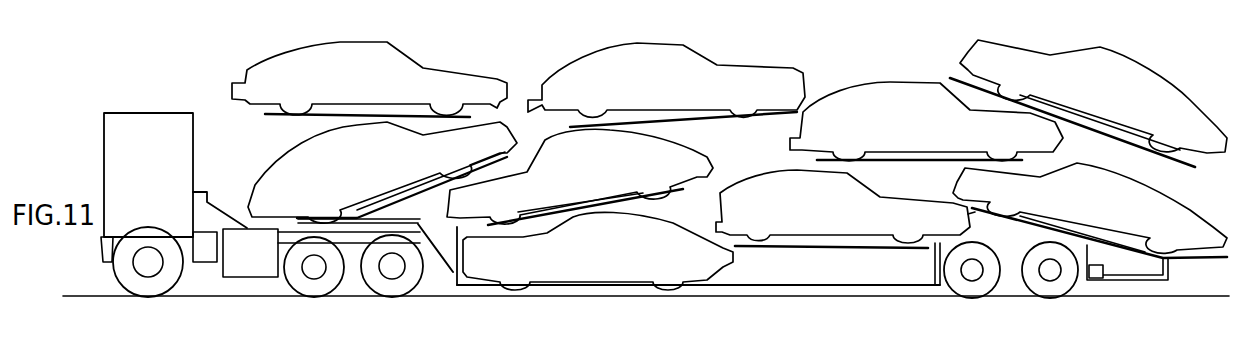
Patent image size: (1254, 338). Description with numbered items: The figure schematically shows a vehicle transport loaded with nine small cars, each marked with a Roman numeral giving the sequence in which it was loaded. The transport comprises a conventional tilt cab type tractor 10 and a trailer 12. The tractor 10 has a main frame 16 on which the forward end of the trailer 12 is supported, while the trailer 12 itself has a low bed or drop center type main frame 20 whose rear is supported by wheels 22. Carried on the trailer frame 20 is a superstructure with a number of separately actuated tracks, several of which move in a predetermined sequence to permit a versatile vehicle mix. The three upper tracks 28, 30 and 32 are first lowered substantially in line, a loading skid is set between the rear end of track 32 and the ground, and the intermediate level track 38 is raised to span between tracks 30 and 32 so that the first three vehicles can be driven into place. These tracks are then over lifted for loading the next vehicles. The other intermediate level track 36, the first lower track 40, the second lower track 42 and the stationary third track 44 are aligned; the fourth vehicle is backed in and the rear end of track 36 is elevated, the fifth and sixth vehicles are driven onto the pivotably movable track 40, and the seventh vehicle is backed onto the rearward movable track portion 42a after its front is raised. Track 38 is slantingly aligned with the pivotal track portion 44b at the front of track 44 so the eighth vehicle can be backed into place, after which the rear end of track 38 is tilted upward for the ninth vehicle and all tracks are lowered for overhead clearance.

The tractor 10 is at (145, 127).
The trailer 12 is at (682, 298).
The main frame 16 is at (351, 284).
The main frame 20 is at (848, 294).
The wheels 22 is at (1048, 292).
The upper track 28 is at (320, 117).
The upper track 30 is at (727, 114).
The upper track 32 is at (1140, 152).
The intermediate level track 36 is at (403, 188).
The intermediate level track 38 is at (923, 163).
The first lower track 40 is at (652, 192).
The second lower track 42 is at (802, 248).
The rearward movable track portion 42a is at (562, 281).
The third track 44 is at (1188, 262).
The pivotal track portion 44b is at (968, 213).